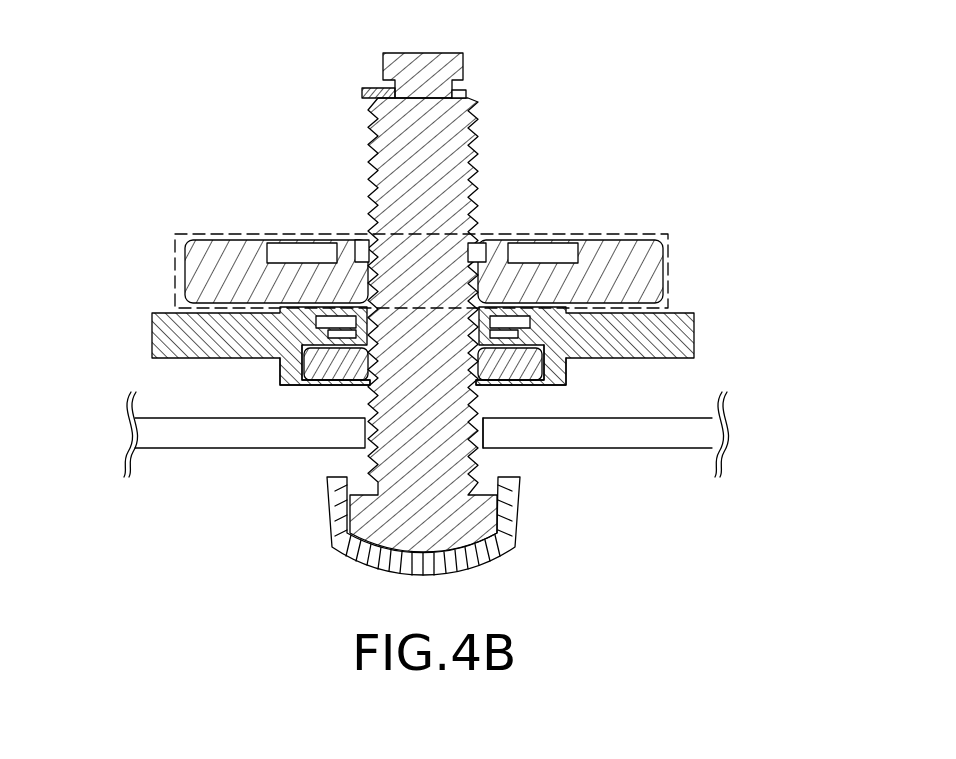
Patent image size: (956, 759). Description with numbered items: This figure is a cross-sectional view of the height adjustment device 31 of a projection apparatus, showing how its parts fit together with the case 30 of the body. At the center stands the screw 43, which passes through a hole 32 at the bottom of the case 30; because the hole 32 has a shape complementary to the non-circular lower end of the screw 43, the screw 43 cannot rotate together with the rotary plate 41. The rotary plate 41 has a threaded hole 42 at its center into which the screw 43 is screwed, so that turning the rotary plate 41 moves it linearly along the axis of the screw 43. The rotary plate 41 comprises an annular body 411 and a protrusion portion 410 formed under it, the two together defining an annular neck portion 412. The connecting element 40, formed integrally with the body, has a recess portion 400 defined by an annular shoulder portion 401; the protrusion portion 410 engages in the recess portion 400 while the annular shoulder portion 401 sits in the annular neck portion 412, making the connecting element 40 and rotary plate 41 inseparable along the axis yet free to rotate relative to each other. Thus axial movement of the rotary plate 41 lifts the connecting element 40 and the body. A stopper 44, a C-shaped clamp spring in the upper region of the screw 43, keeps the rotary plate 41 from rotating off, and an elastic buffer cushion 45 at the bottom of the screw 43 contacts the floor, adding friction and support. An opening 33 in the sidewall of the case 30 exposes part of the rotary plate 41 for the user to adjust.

The case 30 is at (693, 440).
The height adjustment device 31 is at (208, 149).
The hole 32 is at (484, 428).
The opening 33 is at (173, 262).
The connecting element 40 is at (670, 315).
The recess portion 400 is at (292, 370).
The annular shoulder portion 401 is at (283, 322).
The rotary plate 41 is at (457, 236).
The protrusion portion 410 is at (330, 368).
The annular body 411 is at (620, 245).
The annular neck portion 412 is at (487, 330).
The threaded hole 42 is at (375, 240).
The screw 43 is at (413, 63).
The stopper 44 is at (363, 93).
The buffer cushion 45 is at (510, 516).